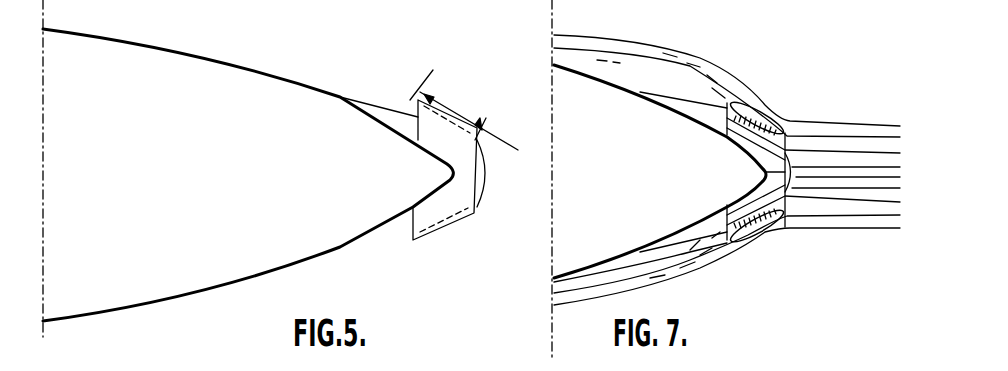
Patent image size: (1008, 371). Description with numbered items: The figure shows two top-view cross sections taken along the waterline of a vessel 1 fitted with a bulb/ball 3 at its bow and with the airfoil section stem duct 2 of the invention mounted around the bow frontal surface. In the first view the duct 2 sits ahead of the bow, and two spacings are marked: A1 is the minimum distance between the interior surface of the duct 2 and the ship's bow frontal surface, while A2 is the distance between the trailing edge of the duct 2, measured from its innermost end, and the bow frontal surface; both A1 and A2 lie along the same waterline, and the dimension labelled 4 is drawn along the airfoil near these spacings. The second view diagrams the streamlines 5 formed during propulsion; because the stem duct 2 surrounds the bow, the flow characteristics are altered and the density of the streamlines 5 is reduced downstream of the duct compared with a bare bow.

In FIG. 5, the vessel 1 is at (193, 56).
In FIG. 5, the airfoil section stem duct 2 is at (456, 111).
In FIG. 5, the bulb/ball 3 is at (393, 108).
In FIG. 5, the plate spacing 4 is at (503, 125).
In FIG. 7, the streamlines 5 is at (835, 120).
In FIG. 5, the minimum distance between the duct's interior surface and the ship's bow frontal A1 is at (449, 140).
In FIG. 5, the distance between the duct's trailing edge and the ship's bow frontal surface A2 is at (422, 101).